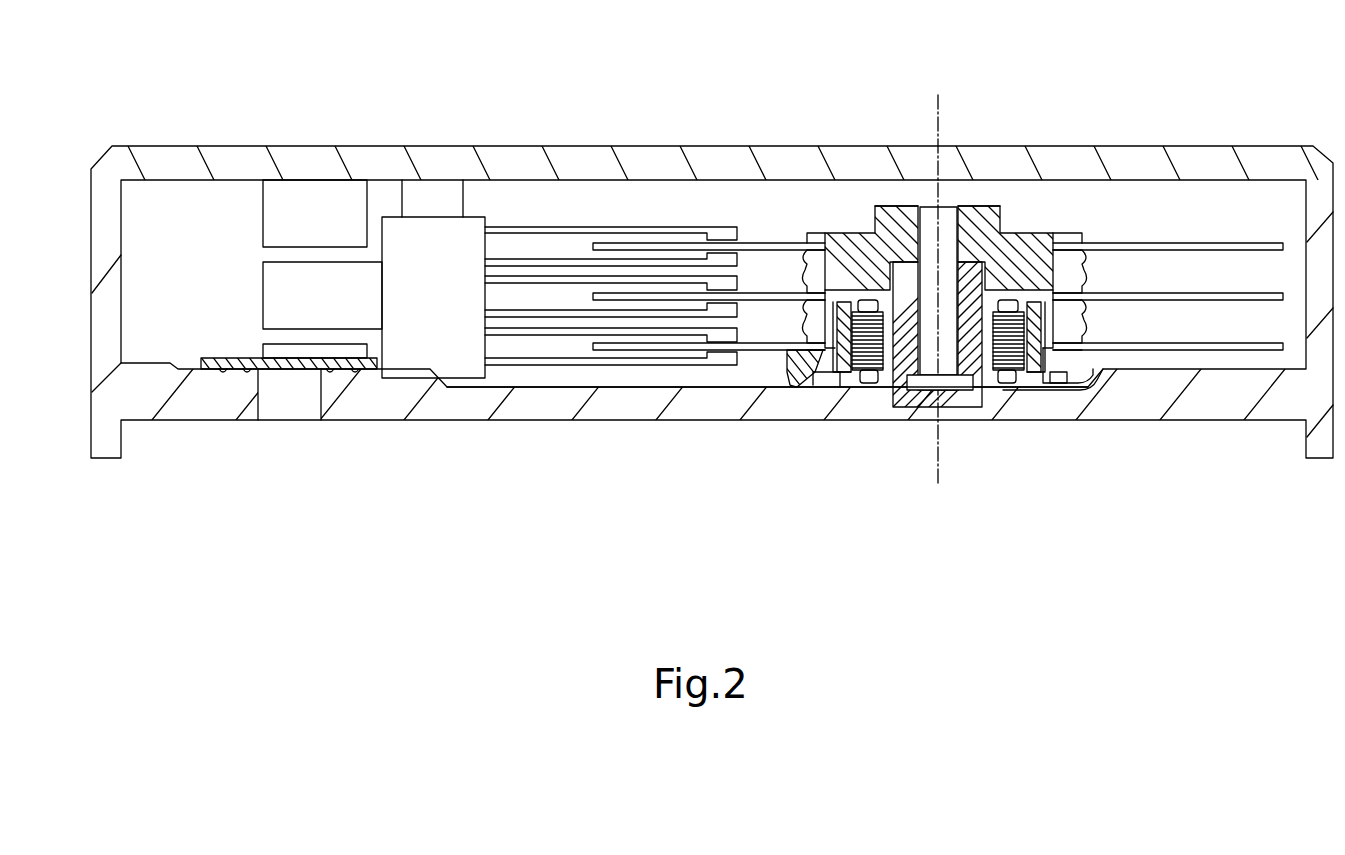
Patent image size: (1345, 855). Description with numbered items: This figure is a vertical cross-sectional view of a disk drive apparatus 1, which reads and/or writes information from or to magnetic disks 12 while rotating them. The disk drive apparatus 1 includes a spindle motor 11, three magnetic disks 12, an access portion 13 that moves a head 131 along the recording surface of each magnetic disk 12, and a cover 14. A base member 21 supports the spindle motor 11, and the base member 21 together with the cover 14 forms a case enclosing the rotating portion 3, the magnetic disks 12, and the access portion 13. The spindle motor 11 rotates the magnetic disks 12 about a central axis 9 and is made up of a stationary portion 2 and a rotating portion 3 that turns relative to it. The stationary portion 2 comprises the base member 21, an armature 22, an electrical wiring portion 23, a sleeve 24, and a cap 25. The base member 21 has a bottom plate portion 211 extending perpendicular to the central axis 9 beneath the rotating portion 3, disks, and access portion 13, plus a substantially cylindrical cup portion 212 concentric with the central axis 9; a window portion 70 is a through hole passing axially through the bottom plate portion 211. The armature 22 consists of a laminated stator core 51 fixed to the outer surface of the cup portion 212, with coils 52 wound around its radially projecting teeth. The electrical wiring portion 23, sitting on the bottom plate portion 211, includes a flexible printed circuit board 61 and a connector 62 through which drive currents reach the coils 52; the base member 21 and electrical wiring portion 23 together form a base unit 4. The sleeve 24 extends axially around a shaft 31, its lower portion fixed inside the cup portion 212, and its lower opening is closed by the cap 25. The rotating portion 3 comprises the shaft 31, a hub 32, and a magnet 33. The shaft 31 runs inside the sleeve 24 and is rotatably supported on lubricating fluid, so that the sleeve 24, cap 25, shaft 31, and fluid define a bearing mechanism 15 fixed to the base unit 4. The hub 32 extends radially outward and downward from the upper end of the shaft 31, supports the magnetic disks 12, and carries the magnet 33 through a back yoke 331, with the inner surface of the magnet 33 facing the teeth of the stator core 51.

The disk drive apparatus 1 is at (340, 120).
The stationary portion 2 is at (940, 377).
The rotating portion 3 is at (887, 203).
The base unit 4 is at (617, 432).
The central axis 9 is at (937, 112).
The spindle motor 11 is at (832, 208).
The magnetic disk 12 is at (1180, 245).
The access portion 13 is at (537, 210).
The head 131 is at (725, 235).
The cover 14 is at (230, 165).
The bearing mechanism 15 is at (1060, 268).
The base member 21 is at (767, 435).
The bottom plate portion 211 is at (880, 485).
The cup portion 212 is at (885, 378).
The armature 22 is at (940, 409).
The electrical wiring portion 23 is at (346, 438).
The sleeve 24 is at (917, 415).
The cap 25 is at (947, 410).
The shaft 31 is at (955, 205).
The hub 32 is at (1003, 280).
The magnet 33 is at (1089, 408).
The back yoke 331 is at (1062, 378).
The stator core 51 is at (1027, 385).
The coil 52 is at (1007, 385).
The flexible printed circuit board 61 is at (492, 395).
The connector 62 is at (345, 375).
The window portion 70 is at (288, 400).